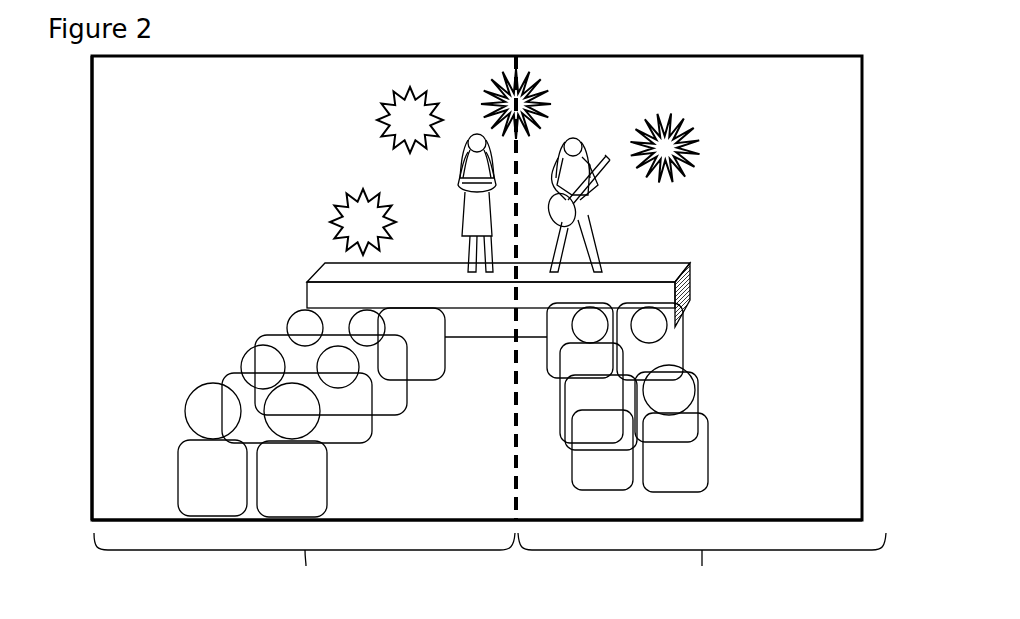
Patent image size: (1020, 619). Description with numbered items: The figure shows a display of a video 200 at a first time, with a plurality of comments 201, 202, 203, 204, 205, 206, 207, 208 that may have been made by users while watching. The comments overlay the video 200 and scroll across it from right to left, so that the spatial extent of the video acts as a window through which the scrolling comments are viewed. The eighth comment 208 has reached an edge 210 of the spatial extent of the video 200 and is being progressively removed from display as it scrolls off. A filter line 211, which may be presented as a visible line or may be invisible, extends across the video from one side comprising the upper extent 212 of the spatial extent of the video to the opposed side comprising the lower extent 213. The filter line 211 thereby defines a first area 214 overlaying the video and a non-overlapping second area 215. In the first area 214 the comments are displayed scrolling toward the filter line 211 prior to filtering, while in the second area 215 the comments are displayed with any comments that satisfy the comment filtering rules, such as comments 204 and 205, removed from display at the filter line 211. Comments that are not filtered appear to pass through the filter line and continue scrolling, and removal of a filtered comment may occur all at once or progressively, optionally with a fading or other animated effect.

The video 200 is at (340, 108).
The comment 201 is at (758, 89).
The comment 202 is at (832, 140).
The comment 203 is at (850, 190).
The comment 204 is at (772, 254).
The comment 205 is at (868, 313).
The comment 206 is at (738, 365).
The comment 207 is at (797, 472).
The eighth comment 208 is at (150, 399).
The edge 210 is at (98, 281).
The filter line 211 is at (515, 68).
The upper extent 212 is at (408, 58).
The lower extent 213 is at (463, 519).
The first area 214 is at (702, 566).
The second area 215 is at (304, 568).